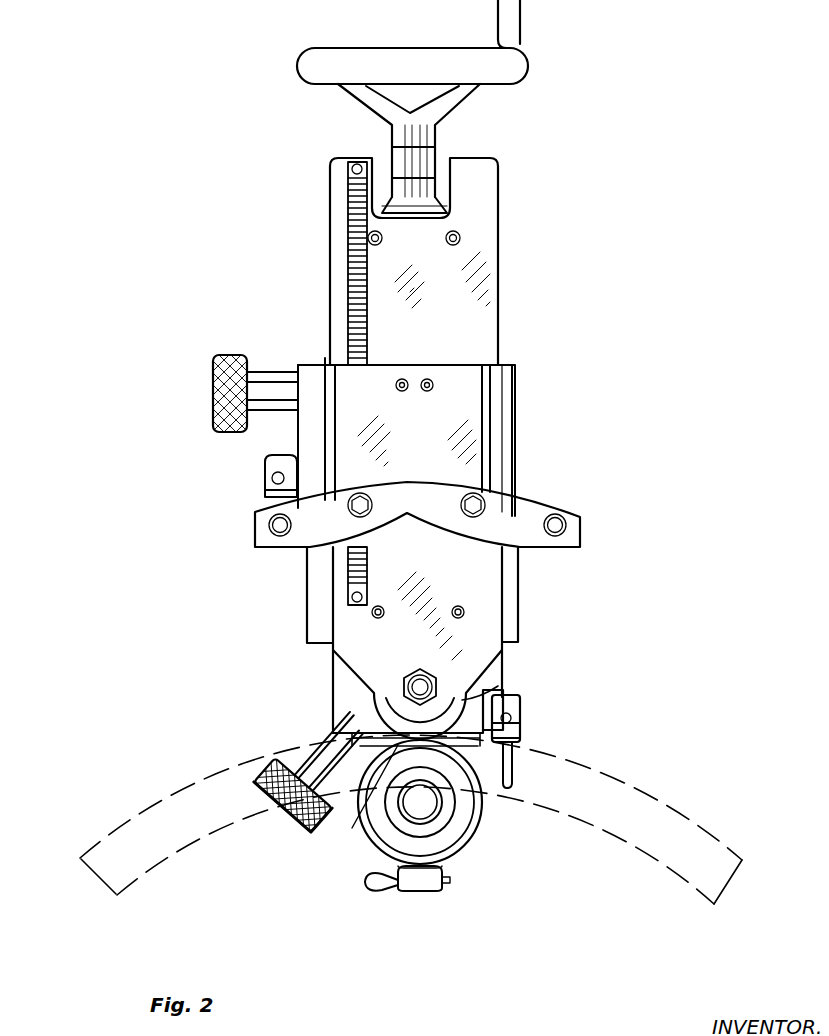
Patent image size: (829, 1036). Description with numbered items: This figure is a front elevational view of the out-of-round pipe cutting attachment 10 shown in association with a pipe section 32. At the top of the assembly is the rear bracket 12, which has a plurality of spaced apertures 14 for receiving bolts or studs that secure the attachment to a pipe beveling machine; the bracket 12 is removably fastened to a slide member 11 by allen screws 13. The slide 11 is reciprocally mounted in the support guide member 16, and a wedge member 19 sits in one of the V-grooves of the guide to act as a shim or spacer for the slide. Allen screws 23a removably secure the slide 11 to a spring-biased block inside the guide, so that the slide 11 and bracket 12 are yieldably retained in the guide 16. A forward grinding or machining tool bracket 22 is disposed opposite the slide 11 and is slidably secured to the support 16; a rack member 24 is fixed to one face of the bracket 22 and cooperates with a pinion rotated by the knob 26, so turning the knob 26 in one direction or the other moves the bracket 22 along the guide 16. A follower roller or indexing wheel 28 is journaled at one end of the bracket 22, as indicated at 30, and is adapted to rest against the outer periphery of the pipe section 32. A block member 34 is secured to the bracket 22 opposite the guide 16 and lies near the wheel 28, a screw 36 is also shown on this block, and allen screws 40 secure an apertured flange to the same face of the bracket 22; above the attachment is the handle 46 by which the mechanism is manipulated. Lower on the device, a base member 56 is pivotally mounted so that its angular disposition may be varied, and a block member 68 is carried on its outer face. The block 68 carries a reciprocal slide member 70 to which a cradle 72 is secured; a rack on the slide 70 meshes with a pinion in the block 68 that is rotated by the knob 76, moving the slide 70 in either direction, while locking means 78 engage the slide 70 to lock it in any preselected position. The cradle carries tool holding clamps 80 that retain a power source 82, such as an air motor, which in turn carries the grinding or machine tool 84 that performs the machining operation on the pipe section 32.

The out-of-round attachment 10 is at (498, 301).
The slide member 11 is at (468, 390).
The rear bracket 12 is at (530, 514).
The allen screws 13 is at (473, 503).
The spaced apertures 14 is at (278, 527).
The support guide member 16 is at (506, 412).
The wedge member 19 is at (330, 365).
The grinding or machining tool bracket 22 is at (483, 250).
The allen screws 23a is at (430, 378).
The rack member 24 is at (348, 240).
The knob 26 is at (213, 380).
The follower roller or indexing wheel 28 is at (500, 689).
The journal of indexing wheel 30 is at (425, 676).
The pipe section 32 is at (684, 818).
The block member 34 is at (513, 605).
The screw 36 is at (378, 619).
The allen screws 40 is at (455, 231).
The handle 46 is at (368, 55).
The base member 56 is at (340, 668).
The block member 68 is at (365, 711).
The reciprocal slide member 70 is at (462, 741).
The cradle or machine tool receiving member 72 is at (364, 794).
The knob 76 is at (300, 822).
The locking means 78 is at (522, 735).
The tool holding clamps 80 is at (470, 840).
The power source 82 is at (392, 838).
The grinding tool or machine tool 84 is at (426, 804).